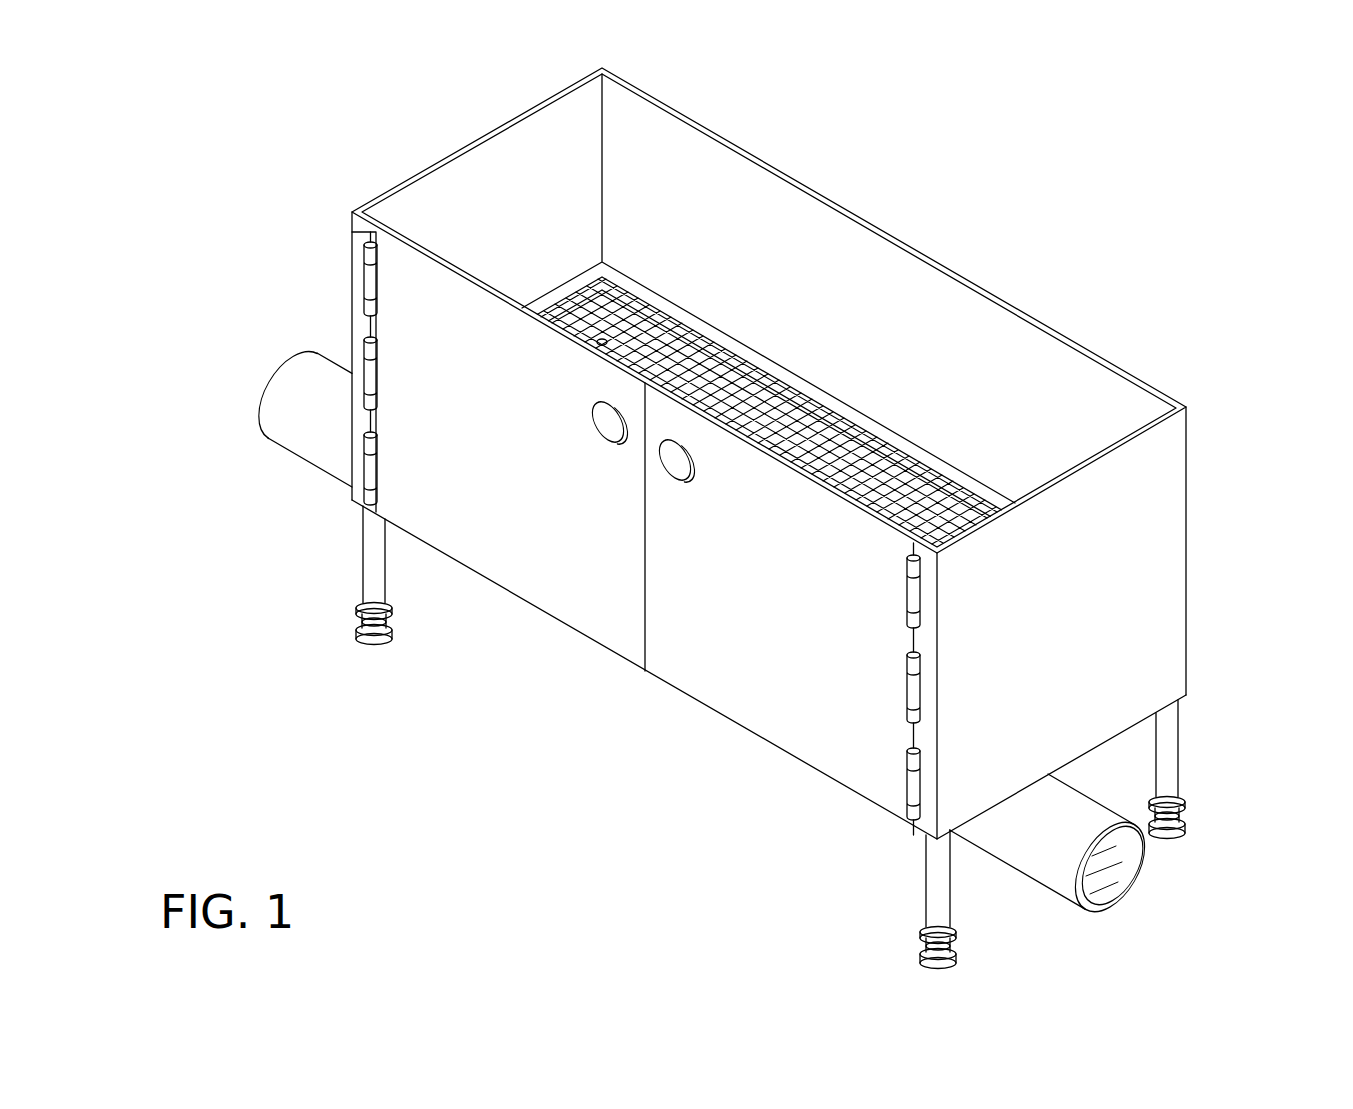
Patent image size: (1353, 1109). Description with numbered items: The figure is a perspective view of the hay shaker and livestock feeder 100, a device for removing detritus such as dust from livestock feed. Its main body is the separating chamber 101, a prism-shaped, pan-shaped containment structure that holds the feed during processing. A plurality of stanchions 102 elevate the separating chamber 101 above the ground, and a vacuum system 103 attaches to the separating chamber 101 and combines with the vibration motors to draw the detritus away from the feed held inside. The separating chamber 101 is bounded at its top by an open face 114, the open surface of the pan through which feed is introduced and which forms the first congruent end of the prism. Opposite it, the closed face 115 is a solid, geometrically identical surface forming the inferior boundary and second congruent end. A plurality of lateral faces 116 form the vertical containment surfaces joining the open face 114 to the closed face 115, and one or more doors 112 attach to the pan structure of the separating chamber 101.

The hay shaker and livestock feeder 100 is at (190, 228).
The separating chamber 101 is at (1155, 375).
The plurality of stanchions 102 is at (960, 960).
The vacuum system 103 is at (303, 465).
The doors 112 is at (688, 650).
The open face 114 is at (843, 257).
The closed face 115 is at (847, 830).
The plurality of lateral faces 116 is at (567, 183).